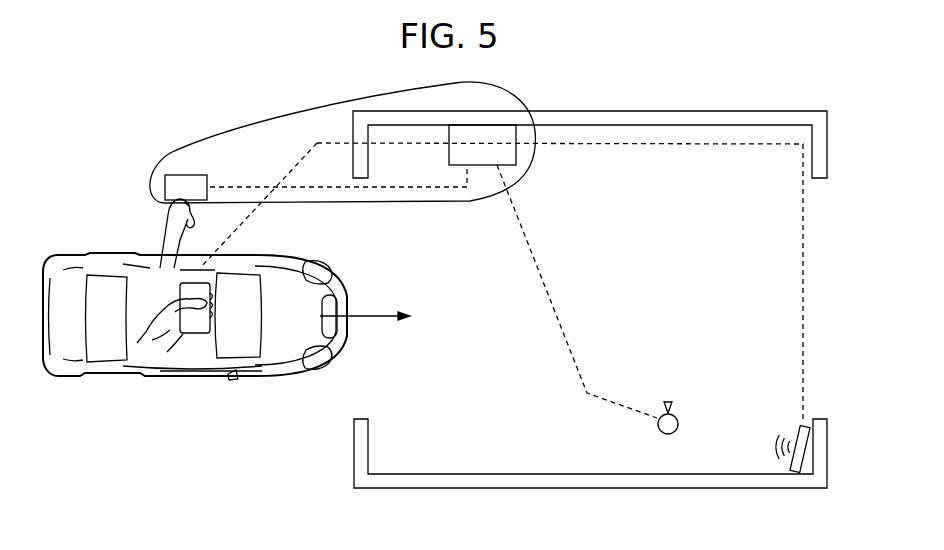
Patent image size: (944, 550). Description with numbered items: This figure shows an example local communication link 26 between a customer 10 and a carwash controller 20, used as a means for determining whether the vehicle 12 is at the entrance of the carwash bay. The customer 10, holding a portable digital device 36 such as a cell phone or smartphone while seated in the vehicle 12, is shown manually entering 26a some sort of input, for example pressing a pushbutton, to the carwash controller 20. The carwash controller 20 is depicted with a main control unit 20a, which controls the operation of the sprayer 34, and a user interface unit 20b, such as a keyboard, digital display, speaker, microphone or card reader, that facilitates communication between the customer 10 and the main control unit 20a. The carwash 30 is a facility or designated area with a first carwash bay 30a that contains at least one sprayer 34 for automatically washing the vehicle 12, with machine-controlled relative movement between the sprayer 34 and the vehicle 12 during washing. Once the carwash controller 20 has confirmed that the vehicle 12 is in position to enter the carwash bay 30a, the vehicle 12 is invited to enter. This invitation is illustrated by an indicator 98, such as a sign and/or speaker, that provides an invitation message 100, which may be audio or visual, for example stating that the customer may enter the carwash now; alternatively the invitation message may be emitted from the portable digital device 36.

The customer 10 is at (157, 315).
The vehicle 12 is at (112, 376).
The carwash controller 20 is at (255, 123).
The main control unit 20a is at (482, 165).
The user interface unit 20b is at (185, 175).
The local communication link 26 is at (205, 220).
The manually entering an input 26a is at (212, 212).
The carwash 30 is at (485, 489).
The first carwash bay 30a is at (640, 178).
The sprayer 34 is at (668, 434).
The portable digital device 36 is at (200, 334).
The indicator 98 is at (795, 432).
The invitation message 100 is at (770, 445).